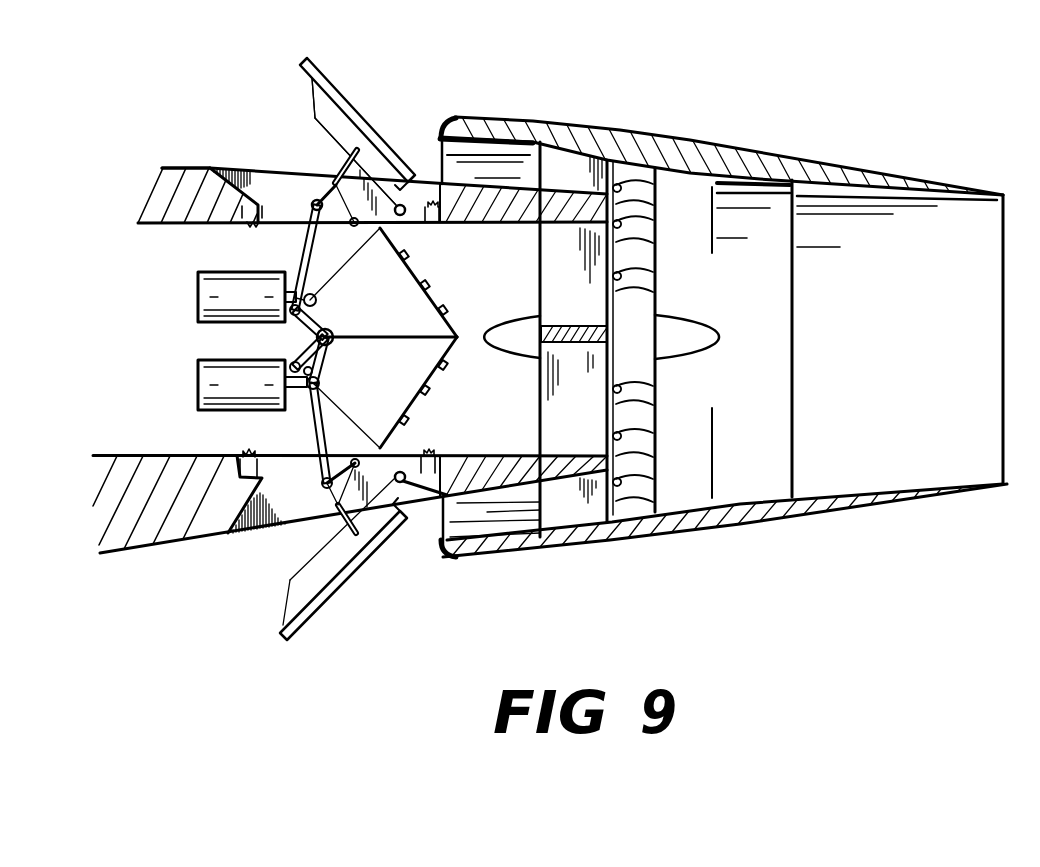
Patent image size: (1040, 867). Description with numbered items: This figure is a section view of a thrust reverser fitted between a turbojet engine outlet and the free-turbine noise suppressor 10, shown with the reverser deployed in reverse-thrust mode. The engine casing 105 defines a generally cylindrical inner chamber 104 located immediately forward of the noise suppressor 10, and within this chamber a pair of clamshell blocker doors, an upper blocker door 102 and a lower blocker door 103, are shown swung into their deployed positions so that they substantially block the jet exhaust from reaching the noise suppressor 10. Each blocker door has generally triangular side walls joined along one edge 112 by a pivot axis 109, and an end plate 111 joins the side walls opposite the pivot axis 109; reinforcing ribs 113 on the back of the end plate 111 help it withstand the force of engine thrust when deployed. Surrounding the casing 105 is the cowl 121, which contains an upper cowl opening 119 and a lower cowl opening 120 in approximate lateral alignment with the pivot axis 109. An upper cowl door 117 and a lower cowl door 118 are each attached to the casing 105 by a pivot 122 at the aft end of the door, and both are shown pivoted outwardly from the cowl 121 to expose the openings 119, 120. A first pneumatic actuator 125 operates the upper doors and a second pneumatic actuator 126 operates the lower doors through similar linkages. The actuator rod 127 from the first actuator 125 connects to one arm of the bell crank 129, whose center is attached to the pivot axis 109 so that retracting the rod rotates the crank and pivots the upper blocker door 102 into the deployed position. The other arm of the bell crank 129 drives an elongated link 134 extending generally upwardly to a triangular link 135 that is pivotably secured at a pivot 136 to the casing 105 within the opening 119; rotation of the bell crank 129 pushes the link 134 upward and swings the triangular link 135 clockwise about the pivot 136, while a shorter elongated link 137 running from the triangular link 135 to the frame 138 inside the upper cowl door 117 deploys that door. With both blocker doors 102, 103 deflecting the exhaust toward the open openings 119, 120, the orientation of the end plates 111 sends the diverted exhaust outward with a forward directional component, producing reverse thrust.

The free-turbine noise suppressor 10 is at (737, 616).
The upper blocker door 102 is at (418, 308).
The lower blocker door 103 is at (434, 370).
The inner chamber 104 is at (278, 432).
The casing 105 is at (170, 228).
The pivot axis 109 is at (336, 341).
The end plate 111 is at (423, 295).
The edge 112 is at (438, 366).
The reinforcing ribs 113 is at (428, 288).
The upper cowl door 117 is at (325, 87).
The lower cowl door 118 is at (345, 585).
The upper cowl opening 119 is at (247, 172).
The lower cowl opening 120 is at (260, 527).
The cowl 121 is at (180, 168).
The pivot 122 is at (420, 500).
The first pneumatic actuator 125 is at (212, 392).
The second pneumatic actuator 126 is at (200, 326).
The actuator rod 127 is at (262, 382).
The bell crank 129 is at (334, 364).
The elongated link 134 is at (307, 240).
The triangular link 135 is at (318, 200).
The pivot 136 is at (372, 160).
The shorter elongated link 137 is at (335, 183).
The frame 138 is at (338, 135).